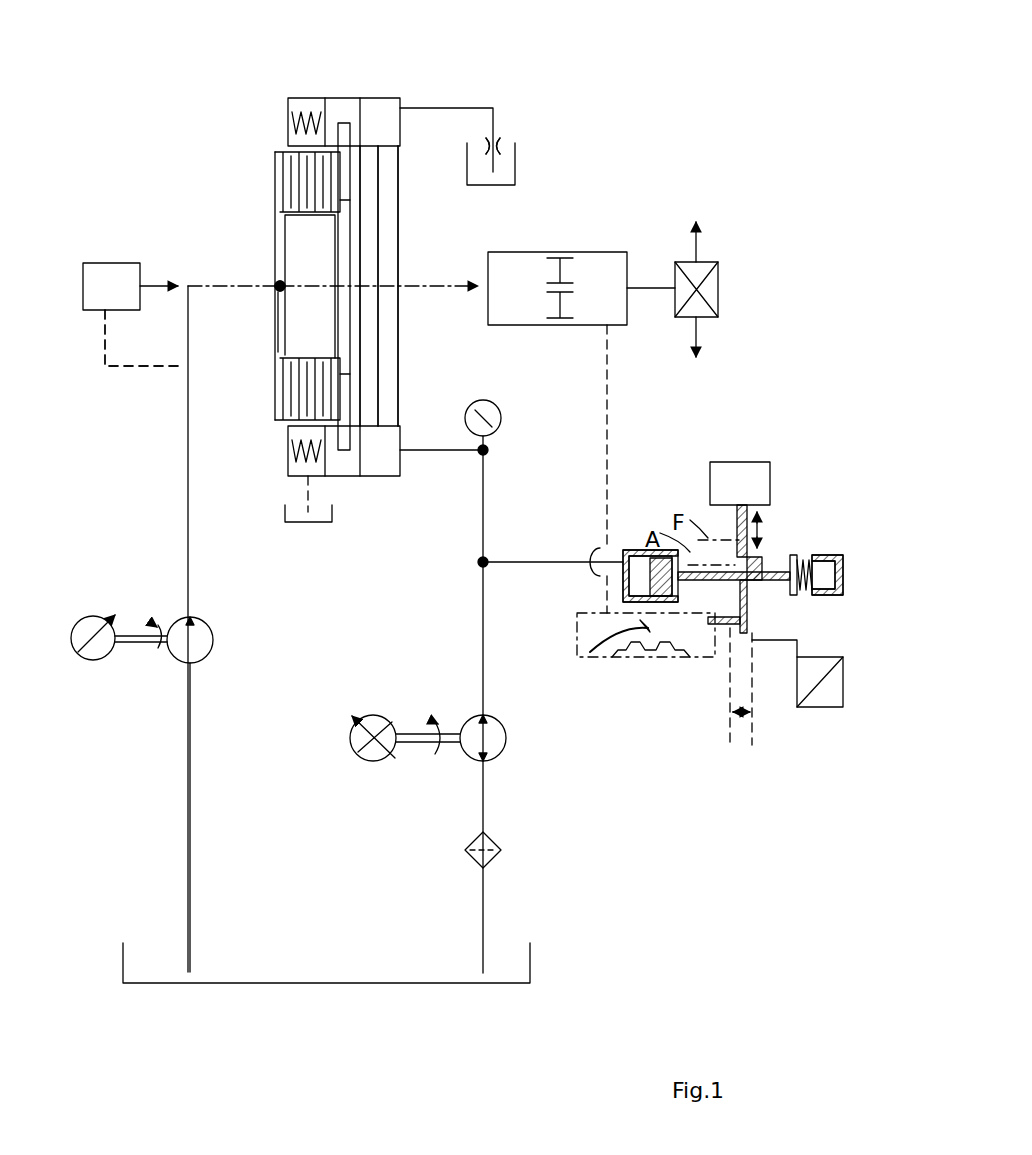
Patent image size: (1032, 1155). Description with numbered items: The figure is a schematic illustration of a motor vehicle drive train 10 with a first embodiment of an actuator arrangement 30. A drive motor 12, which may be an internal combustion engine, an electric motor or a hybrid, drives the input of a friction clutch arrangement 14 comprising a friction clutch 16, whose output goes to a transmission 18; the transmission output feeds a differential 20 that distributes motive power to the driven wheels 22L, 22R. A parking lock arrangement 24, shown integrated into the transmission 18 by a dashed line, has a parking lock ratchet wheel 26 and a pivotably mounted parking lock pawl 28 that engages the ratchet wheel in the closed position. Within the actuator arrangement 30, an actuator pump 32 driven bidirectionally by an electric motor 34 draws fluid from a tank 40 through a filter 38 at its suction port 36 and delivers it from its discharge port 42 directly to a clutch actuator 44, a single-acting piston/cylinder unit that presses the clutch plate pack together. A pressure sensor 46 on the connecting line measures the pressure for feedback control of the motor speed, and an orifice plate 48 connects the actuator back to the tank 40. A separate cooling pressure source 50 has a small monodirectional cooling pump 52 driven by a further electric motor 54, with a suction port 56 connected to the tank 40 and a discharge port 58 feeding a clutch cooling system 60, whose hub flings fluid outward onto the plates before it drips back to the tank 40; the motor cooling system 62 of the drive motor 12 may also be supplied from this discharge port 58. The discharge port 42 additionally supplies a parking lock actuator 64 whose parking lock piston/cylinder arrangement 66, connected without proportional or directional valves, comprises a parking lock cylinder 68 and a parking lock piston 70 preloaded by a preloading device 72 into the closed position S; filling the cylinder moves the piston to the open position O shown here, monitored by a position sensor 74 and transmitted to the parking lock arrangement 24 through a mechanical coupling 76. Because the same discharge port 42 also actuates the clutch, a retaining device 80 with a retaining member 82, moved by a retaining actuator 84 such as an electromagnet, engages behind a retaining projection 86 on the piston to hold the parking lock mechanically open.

The drive train 10 is at (705, 108).
The drive motor 12 is at (108, 263).
The friction clutch arrangement 14 is at (286, 241).
The friction clutch 16 is at (296, 182).
The transmission 18 is at (598, 252).
The differential 20 is at (722, 290).
The driven wheel 22R is at (705, 230).
The driven wheel 22L is at (705, 352).
The parking lock arrangement 24 is at (622, 712).
The parking lock ratchet wheel 26 is at (650, 655).
The parking lock pawl 28 is at (614, 650).
The actuator arrangement 30 is at (710, 905).
The actuator pump 32 is at (458, 752).
The electric motor 34 is at (352, 755).
The suction port 36 is at (468, 752).
The filter 38 is at (500, 862).
The tank 40 is at (282, 515).
The discharge port 42 is at (475, 712).
The clutch actuator 44 is at (372, 458).
The pressure sensor 46 is at (480, 400).
The orifice plate 48 is at (502, 150).
The cooling pressure source 50 is at (135, 698).
The cooling pump 52 is at (215, 652).
The further electric motor 54 is at (83, 618).
The suction port 56 is at (195, 663).
The discharge port 58 is at (198, 618).
The clutch cooling system 60 is at (262, 300).
The motor cooling system 62 is at (105, 340).
The parking lock actuator 64 is at (843, 553).
The parking lock piston/cylinder arrangement 66 is at (845, 549).
The parking lock cylinder 68 is at (630, 548).
The parking lock piston 70 is at (765, 565).
The preloading device 72 is at (800, 592).
The position sensor 74 is at (843, 705).
The mechanical coupling 76 is at (845, 672).
The retaining device 80 is at (788, 501).
The retaining member 82 is at (735, 522).
The retaining actuator 84 is at (742, 458).
The retaining projection 86 is at (752, 580).
The closed position S is at (732, 755).
The open position O is at (760, 755).